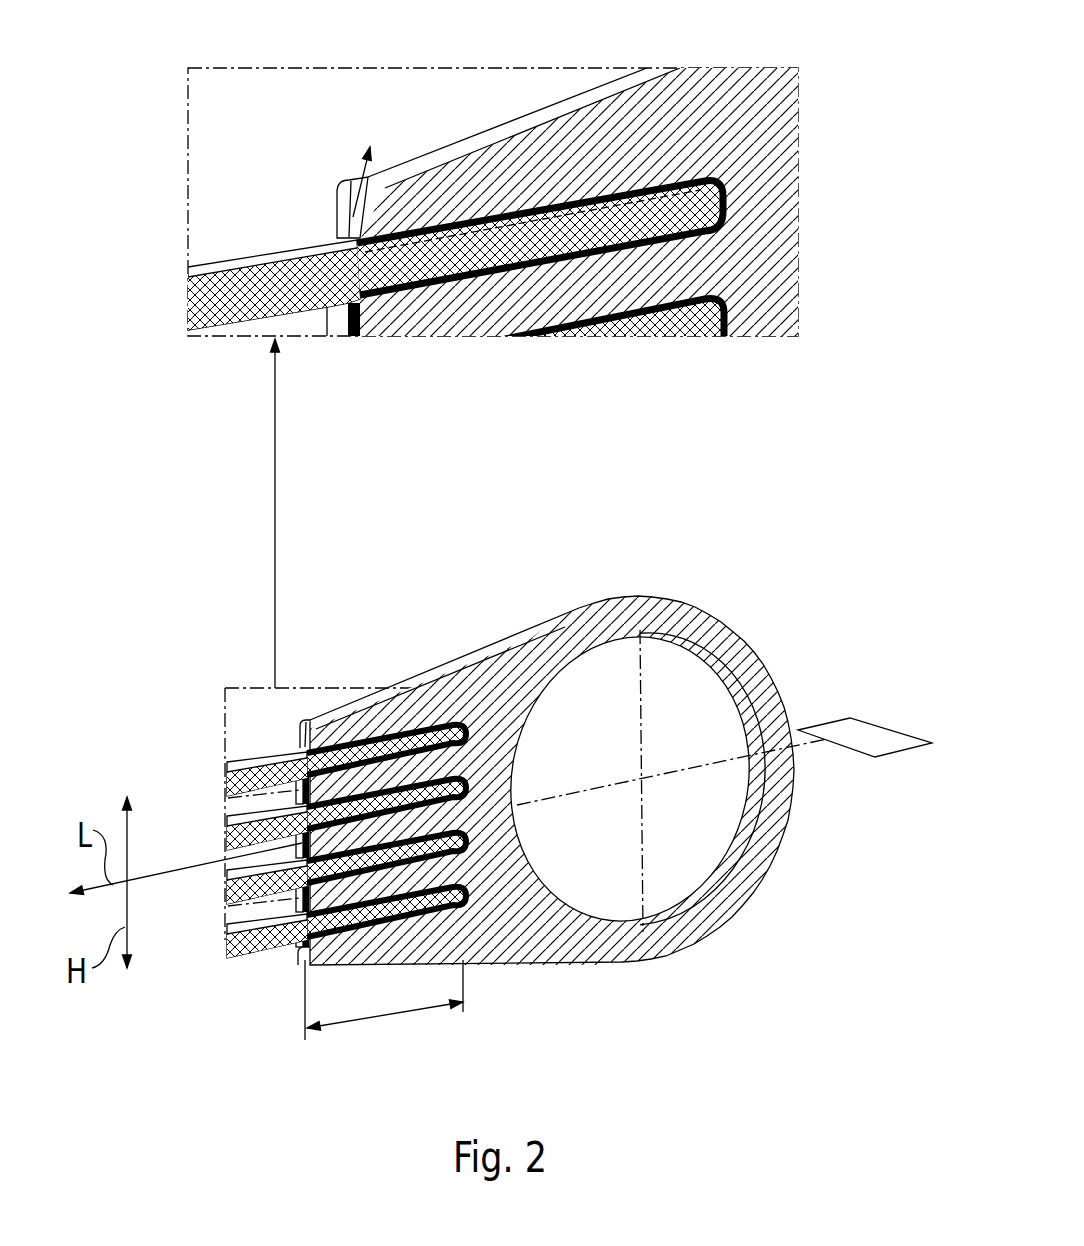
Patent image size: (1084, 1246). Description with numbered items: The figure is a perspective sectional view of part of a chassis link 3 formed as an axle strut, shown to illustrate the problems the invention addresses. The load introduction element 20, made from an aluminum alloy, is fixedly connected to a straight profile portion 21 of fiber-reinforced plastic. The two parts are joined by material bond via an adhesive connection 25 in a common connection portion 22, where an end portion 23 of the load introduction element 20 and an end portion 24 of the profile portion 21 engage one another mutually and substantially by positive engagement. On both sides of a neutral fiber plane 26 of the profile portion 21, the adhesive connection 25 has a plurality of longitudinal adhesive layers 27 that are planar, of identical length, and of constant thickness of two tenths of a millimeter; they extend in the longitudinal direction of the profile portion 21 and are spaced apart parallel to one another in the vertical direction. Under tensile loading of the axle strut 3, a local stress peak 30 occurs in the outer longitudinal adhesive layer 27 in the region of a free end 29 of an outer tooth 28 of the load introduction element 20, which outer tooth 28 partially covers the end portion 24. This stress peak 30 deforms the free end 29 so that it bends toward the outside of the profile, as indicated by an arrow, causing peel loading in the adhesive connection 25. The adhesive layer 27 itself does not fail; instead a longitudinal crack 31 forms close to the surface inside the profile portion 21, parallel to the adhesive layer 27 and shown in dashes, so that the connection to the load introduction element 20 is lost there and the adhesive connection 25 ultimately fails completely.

The chassis link 3 is at (457, 598).
The load introduction element 20 is at (758, 624).
The profile portion 21 is at (221, 947).
The connection portion 22 is at (382, 1016).
The end portion of the load introduction element 23 is at (386, 804).
The end portion of the profile portion 24 is at (386, 885).
The adhesive connection 25 is at (293, 950).
The neutral fiber plane 26 is at (836, 742).
The longitudinal adhesive layers 27 is at (551, 200).
The outer tooth 28 is at (507, 112).
The free end 29 is at (397, 155).
The local stress peak 30 is at (380, 200).
The longitudinal crack 31 is at (403, 240).